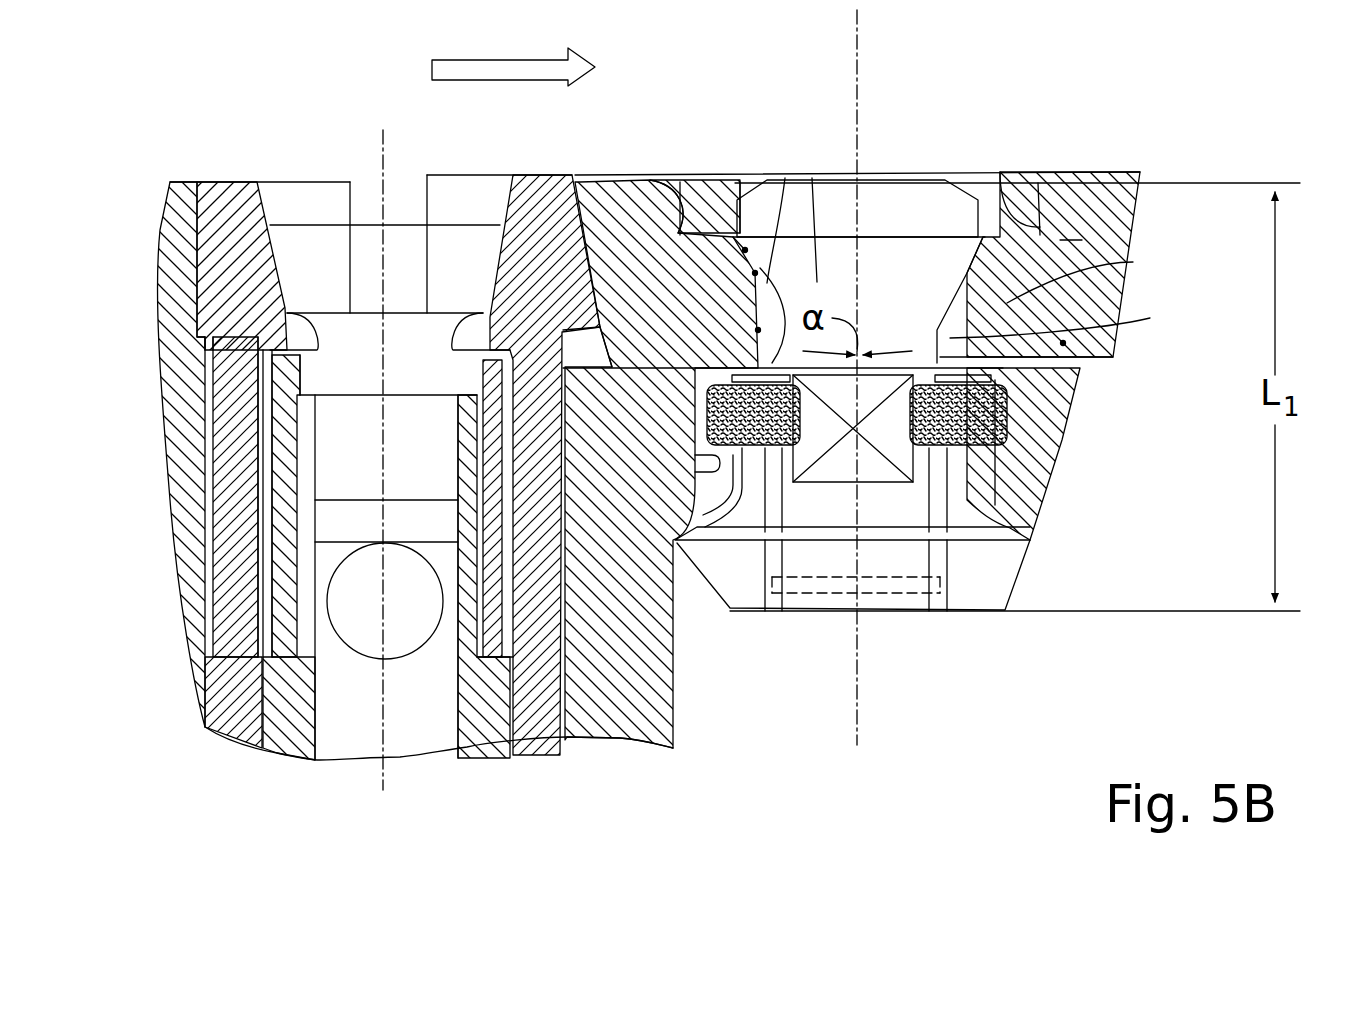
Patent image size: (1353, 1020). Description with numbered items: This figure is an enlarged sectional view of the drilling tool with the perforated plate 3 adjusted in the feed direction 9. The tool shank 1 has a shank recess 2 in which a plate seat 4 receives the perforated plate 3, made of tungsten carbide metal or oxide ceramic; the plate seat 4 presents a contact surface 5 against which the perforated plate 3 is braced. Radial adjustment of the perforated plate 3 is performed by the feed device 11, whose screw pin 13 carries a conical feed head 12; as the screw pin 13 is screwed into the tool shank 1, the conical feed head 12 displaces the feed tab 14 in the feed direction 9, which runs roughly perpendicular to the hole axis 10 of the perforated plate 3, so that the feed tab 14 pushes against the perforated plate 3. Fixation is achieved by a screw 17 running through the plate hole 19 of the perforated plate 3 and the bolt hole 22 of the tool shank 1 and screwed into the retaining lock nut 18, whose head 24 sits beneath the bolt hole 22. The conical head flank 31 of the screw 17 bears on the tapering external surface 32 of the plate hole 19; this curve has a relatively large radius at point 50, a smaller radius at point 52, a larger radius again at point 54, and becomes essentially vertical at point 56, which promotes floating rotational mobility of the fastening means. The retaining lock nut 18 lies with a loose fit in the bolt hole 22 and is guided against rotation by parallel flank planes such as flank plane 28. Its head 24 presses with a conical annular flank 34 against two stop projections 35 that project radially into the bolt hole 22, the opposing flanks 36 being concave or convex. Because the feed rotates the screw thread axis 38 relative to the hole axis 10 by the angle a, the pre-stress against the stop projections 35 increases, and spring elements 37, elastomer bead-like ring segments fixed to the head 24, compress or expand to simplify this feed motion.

The tool shank 1 is at (183, 562).
The shank recess 2 is at (817, 282).
The perforated plate 3 is at (857, 264).
The plate seat 4 is at (1063, 343).
The contact surface 5 is at (653, 352).
The feed direction 9 is at (495, 60).
The hole axis 10 is at (856, 35).
The feed device 11 is at (305, 150).
The conical feed head 12 is at (463, 245).
The screw pin 13 is at (278, 461).
The feed tab 14 is at (540, 255).
The screw 17 is at (903, 268).
The retaining lock nut 18 is at (960, 621).
The plate hole 19 is at (1150, 318).
The bolt hole 22 is at (730, 367).
The head 24 is at (737, 570).
The flank plane 28 is at (673, 748).
The head flank 31 is at (1133, 262).
The external surface 32 is at (680, 182).
The annular flank 34 is at (673, 538).
The stop projections 35 is at (695, 472).
The flanks 36 is at (1020, 588).
The spring elements 37 is at (700, 428).
The screw thread axis 38 is at (861, 705).
The point 50 is at (645, 186).
The point 52 is at (765, 192).
The point 54 is at (767, 267).
The point 56 is at (758, 330).